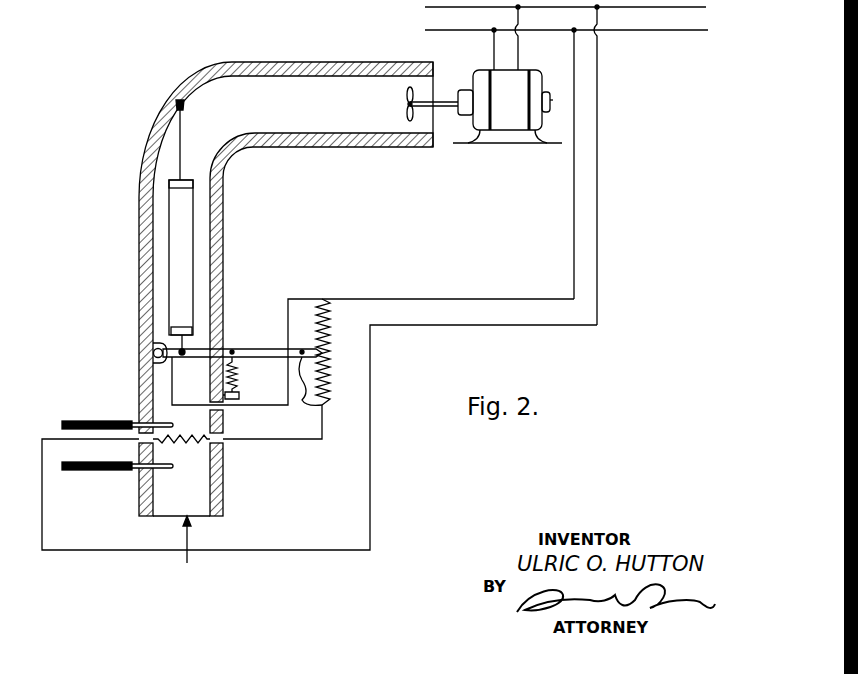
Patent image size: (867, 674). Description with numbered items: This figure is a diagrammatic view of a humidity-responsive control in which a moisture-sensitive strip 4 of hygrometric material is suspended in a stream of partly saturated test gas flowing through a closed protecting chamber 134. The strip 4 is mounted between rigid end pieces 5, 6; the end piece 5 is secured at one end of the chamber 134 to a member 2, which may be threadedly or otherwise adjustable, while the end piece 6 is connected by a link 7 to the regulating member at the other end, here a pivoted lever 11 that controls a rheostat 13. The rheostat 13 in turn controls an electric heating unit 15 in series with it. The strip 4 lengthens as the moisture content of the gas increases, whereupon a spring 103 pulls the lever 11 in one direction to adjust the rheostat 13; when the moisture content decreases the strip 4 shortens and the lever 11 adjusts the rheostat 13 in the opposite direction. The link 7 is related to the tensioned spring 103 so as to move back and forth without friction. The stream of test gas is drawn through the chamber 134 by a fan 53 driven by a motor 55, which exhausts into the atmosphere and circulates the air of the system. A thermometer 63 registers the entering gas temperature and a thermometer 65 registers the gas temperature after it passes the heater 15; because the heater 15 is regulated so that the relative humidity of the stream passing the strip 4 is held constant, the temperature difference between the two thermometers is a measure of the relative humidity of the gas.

The member 2 is at (198, 80).
The moisture-sensitive strip 4 is at (185, 230).
The end piece 5 is at (190, 183).
The end piece 6 is at (191, 332).
The link 7 is at (160, 343).
The pivoted lever 11 is at (277, 349).
The rheostat 13 is at (330, 325).
The heating unit 15 is at (187, 447).
The fan 53 is at (407, 90).
The motor 55 is at (525, 73).
The thermometer 63 is at (100, 471).
The thermometer 65 is at (80, 420).
The spring 103 is at (240, 376).
The chamber 134 is at (223, 259).